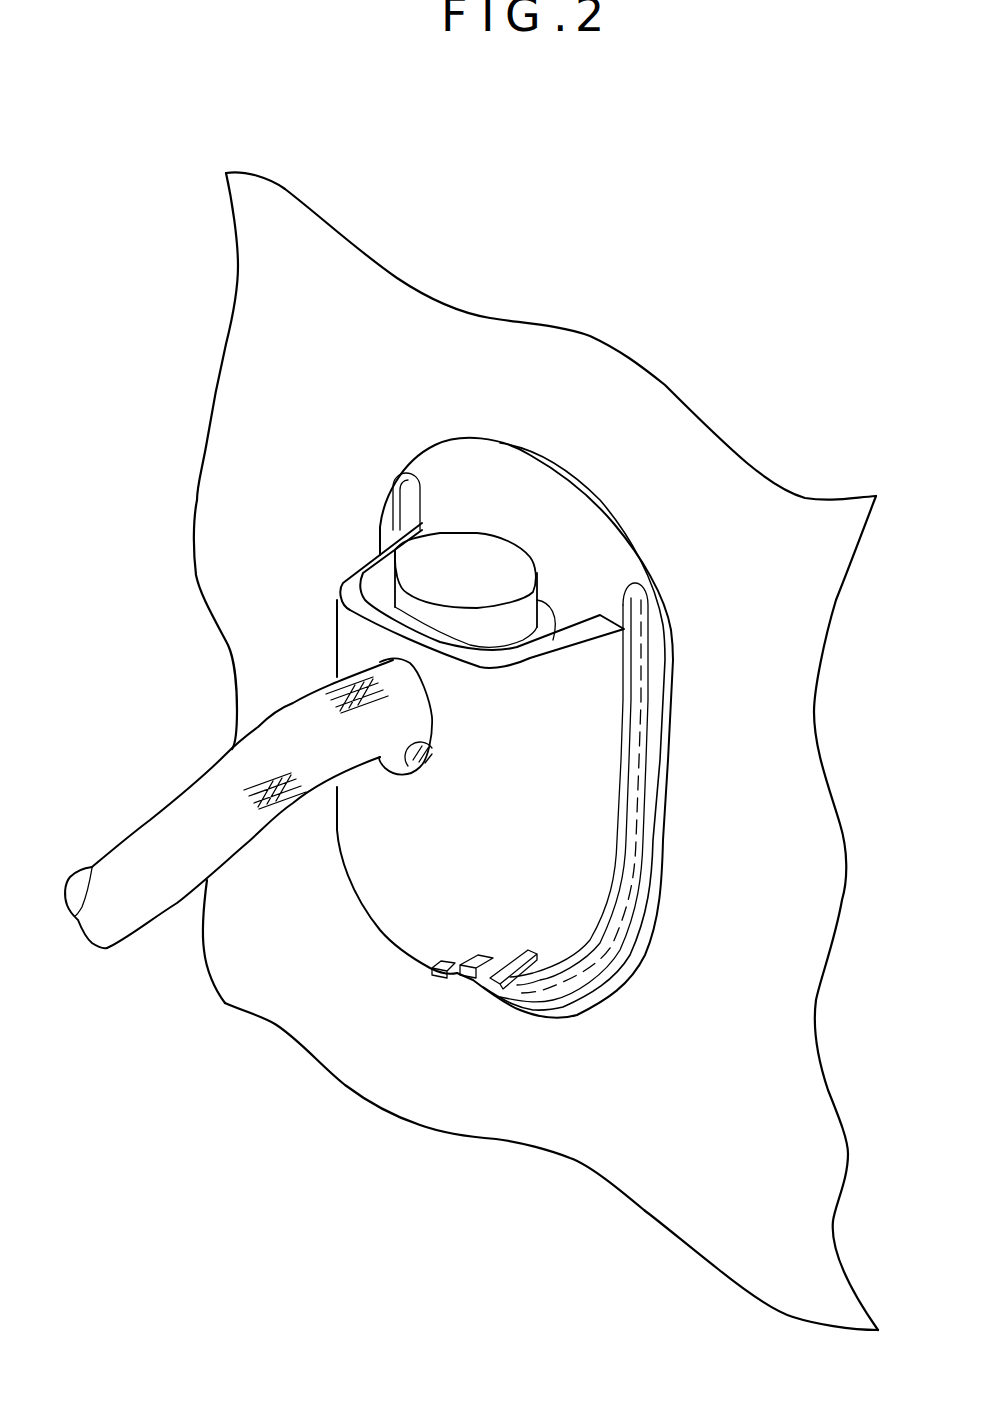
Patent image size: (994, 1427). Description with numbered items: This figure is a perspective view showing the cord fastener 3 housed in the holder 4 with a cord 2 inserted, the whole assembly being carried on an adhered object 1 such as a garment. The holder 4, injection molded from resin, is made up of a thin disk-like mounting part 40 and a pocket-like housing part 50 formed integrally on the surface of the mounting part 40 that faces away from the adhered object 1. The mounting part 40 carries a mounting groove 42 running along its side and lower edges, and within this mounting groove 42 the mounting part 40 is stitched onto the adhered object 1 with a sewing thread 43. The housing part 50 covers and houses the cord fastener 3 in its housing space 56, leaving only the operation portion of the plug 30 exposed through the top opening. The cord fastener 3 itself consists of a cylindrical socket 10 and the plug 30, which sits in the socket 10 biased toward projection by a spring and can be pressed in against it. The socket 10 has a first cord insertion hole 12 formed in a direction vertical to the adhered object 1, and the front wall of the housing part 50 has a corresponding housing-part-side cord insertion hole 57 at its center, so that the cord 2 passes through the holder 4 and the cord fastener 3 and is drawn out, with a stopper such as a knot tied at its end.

The adhered object 1 is at (800, 520).
The cord 2 is at (143, 917).
The cord fastener 3 is at (495, 495).
The holder 4 is at (380, 962).
The socket 10 is at (547, 605).
The first cord insertion hole 12 is at (427, 770).
The plug 30 is at (505, 565).
The mounting part 40 is at (443, 456).
The mounting groove 42 is at (643, 707).
The sewing thread 43 is at (639, 781).
The housing part 50 is at (340, 605).
The housing space 56 is at (377, 577).
The housing-part-side cord insertion hole 57 is at (370, 670).